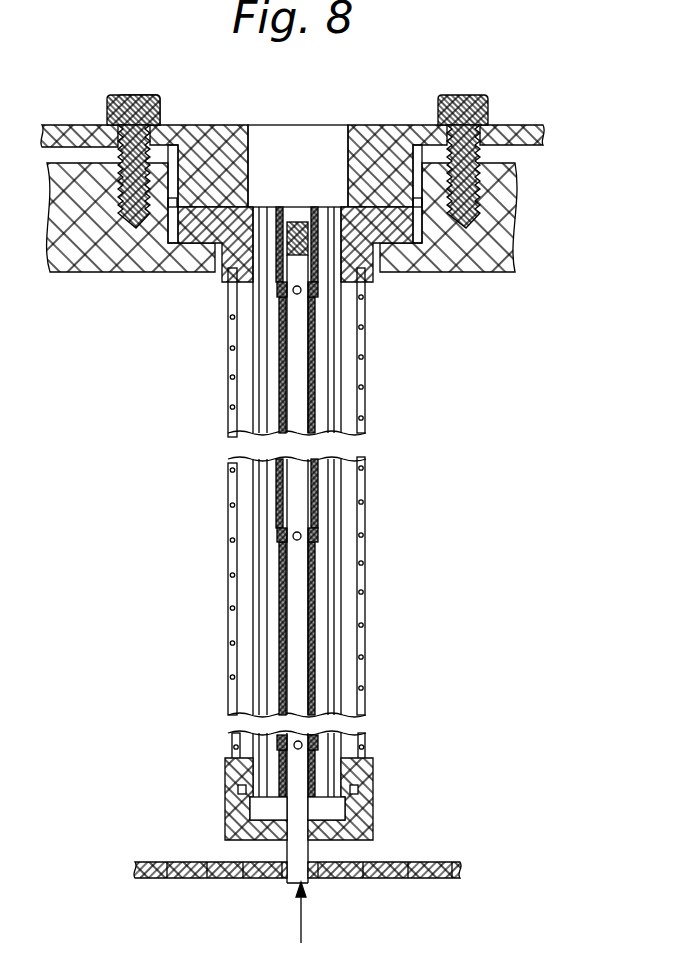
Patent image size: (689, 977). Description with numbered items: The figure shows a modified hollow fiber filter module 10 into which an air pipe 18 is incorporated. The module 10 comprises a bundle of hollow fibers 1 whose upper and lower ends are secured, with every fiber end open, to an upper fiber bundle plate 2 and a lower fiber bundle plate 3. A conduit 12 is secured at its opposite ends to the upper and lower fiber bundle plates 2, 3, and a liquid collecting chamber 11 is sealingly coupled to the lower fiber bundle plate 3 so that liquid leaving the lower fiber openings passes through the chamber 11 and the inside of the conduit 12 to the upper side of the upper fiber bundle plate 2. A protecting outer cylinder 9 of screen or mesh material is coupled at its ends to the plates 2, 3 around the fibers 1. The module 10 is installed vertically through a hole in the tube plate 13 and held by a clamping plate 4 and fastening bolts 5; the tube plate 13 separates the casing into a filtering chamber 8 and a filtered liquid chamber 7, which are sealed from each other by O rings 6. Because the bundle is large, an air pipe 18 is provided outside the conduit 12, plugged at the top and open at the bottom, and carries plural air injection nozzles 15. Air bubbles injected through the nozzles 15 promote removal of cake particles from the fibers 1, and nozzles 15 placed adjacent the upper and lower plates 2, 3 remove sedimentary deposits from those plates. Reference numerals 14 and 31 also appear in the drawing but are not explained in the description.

The hollow fibers 1 is at (345, 317).
The upper fiber bundle plate 2 is at (402, 228).
The lower fiber bundle plate 3 is at (373, 778).
The clamping plate 4 is at (521, 125).
The fastening bolts 5 is at (478, 95).
The O rings 6 is at (180, 237).
The filtered liquid chamber 7 is at (410, 69).
The filtering chamber 8 is at (492, 356).
The protecting outer cylinder 9 is at (365, 350).
The hollow fiber filter module 10 is at (182, 566).
The liquid collecting chamber 11 is at (265, 808).
The conduit 12 is at (292, 334).
The tube plate 13 is at (512, 207).
The base plate 14 is at (435, 862).
The air injection nozzles 15 is at (298, 530).
The air pipe 18 is at (310, 493).
The inner cylinder wall 31 is at (350, 665).